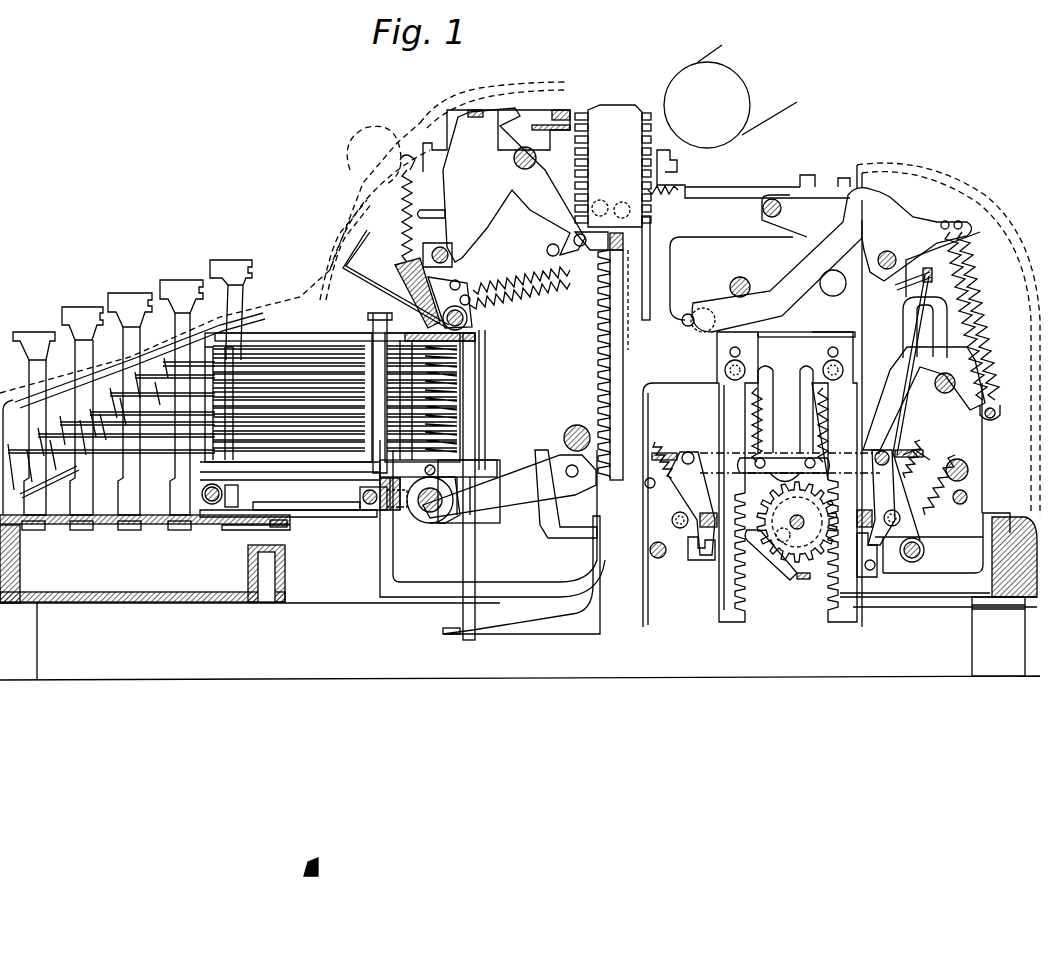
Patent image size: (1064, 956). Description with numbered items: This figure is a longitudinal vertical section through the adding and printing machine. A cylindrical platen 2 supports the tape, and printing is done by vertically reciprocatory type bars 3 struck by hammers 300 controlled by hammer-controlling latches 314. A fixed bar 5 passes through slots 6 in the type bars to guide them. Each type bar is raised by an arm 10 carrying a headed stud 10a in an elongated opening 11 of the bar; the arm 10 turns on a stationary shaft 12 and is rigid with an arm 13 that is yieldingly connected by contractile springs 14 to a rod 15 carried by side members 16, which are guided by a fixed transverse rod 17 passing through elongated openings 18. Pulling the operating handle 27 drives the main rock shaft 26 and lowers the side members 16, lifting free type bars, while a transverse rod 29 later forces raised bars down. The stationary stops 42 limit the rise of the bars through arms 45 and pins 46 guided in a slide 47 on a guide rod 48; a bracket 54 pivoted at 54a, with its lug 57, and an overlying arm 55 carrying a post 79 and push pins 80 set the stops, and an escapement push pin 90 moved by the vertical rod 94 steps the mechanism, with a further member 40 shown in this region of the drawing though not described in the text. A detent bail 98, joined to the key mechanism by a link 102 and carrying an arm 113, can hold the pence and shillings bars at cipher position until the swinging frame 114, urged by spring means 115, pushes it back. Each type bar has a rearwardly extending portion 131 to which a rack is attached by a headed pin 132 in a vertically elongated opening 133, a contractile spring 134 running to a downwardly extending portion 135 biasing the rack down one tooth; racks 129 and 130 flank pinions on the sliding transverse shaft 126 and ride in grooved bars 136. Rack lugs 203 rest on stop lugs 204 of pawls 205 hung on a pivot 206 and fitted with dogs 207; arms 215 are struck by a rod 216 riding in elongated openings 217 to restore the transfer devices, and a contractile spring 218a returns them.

The cylindrical platen 2 is at (750, 88).
The type bar 3 is at (608, 115).
The hammer-controlling latch 314 is at (445, 122).
The operating handle 27 is at (443, 191).
The hammer 300 is at (470, 192).
The spring means 115 is at (672, 190).
The arm 13 is at (937, 222).
The elongated opening 217 is at (893, 253).
The contractile spring 14 is at (975, 262).
The fixed bar 5 is at (625, 240).
The slot 6 is at (650, 262).
The transverse rod 29 is at (738, 283).
The arm 10 is at (778, 290).
The shaft 12 is at (893, 285).
The rod 216 is at (920, 278).
The side member 16 is at (982, 312).
The headed stud 10a is at (700, 310).
The elongated opening 18 is at (912, 331).
The arm 215 is at (990, 342).
The elongated opening 11 is at (683, 322).
The rearwardly extending portion 131 is at (777, 348).
The vertically elongated opening 133 is at (730, 352).
The headed pin or stud 132 is at (725, 370).
The push pin 90 is at (286, 335).
The push pin 80 is at (328, 350).
The post 79 is at (372, 345).
The downwardly extending portion 135 is at (750, 398).
The contractile spring 134 is at (750, 413).
The rod 15 is at (1002, 412).
The transverse rod 17 is at (960, 405).
The stops 42 is at (455, 412).
The swinging frame 114 is at (572, 428).
The arm 113 is at (537, 448).
The lug 203 is at (700, 455).
The pawl 205 is at (870, 458).
The pivot 206 is at (893, 450).
The stop lug 204 is at (895, 455).
The vertical rod 94 is at (185, 455).
The guide rod 48 is at (440, 472).
The slide 47 is at (455, 510).
The pin 46 is at (466, 540).
The pivot 54a is at (395, 512).
The main rock shaft 26 is at (425, 512).
The bracket 54 is at (240, 520).
The arm 55 is at (320, 515).
The lug 57 is at (355, 505).
The link 102 is at (418, 580).
The arm 45 is at (523, 628).
The grooved bar 136 is at (875, 583).
The transverse shaft 126 is at (795, 527).
The detent bail 98 is at (718, 612).
The front rack 129 is at (726, 622).
The rear rack 130 is at (860, 612).
The contractile spring 218a is at (962, 490).
The dog 207 is at (928, 520).
The rod 40 is at (478, 573).